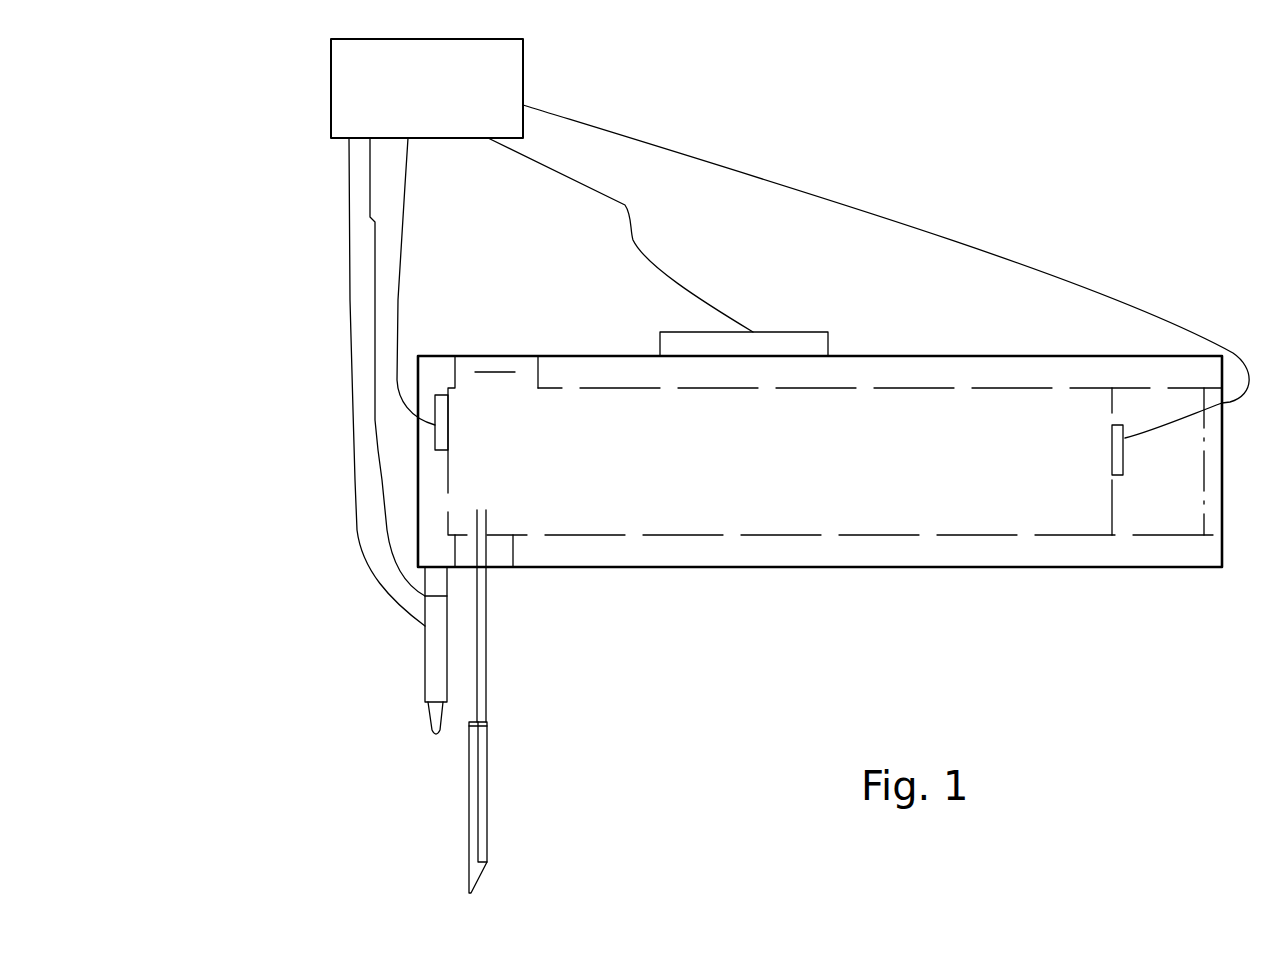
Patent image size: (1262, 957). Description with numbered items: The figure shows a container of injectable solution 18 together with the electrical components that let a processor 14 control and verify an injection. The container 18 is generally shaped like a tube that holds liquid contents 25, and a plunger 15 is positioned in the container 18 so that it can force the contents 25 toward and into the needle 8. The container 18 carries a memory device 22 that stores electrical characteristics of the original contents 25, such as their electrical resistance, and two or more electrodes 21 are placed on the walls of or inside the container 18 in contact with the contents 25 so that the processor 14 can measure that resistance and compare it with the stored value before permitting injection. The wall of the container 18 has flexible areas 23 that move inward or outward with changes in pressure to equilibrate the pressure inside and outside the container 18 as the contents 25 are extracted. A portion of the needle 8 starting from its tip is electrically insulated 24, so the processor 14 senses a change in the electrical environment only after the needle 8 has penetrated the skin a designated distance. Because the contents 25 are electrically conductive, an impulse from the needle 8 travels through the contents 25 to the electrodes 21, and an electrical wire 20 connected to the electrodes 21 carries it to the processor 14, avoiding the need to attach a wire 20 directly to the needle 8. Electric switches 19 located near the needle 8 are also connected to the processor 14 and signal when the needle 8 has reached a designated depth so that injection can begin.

The processor 14 is at (331, 85).
The electrical wire 20 is at (622, 208).
The memory device 22 is at (786, 340).
The container of injectable solution 18 is at (963, 548).
The contents 25 is at (828, 495).
The plunger 15 is at (1167, 500).
The electrodes 21 is at (440, 427).
The flexible areas 23 is at (498, 363).
The electric switches 19 is at (431, 668).
The needle 8 is at (483, 667).
The electrically insulated portion 24 is at (482, 782).